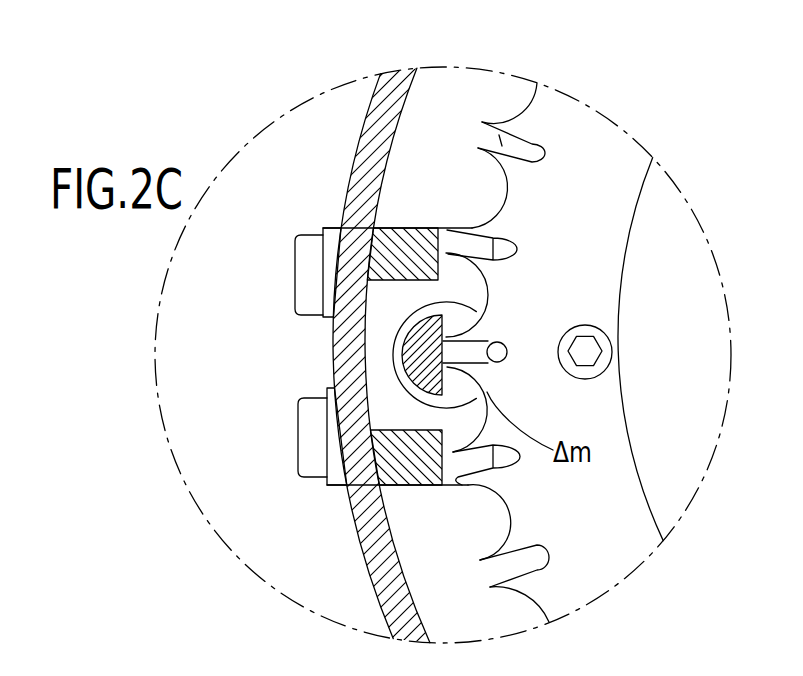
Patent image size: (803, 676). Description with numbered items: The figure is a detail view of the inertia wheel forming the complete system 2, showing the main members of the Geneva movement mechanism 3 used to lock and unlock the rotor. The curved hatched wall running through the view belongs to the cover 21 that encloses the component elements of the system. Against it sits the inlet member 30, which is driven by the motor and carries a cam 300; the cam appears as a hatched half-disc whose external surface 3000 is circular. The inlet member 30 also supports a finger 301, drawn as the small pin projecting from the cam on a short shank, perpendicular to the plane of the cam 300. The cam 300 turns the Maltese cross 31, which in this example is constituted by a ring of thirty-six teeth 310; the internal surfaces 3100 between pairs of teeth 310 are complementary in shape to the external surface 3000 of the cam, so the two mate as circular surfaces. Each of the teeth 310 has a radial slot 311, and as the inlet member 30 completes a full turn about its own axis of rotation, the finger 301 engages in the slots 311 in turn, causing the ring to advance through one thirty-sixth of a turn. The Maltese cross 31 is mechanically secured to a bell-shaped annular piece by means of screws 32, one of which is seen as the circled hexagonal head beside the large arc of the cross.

The complete system 2 is at (178, 502).
The cover 21 is at (363, 177).
The Geneva movement mechanism 3 is at (383, 336).
The inlet member 30 is at (397, 390).
The cam 300 is at (420, 357).
The external surface 3000 is at (426, 320).
The finger 301 is at (508, 353).
The Maltese cross 31 is at (607, 490).
The teeth 310 is at (497, 287).
The internal surfaces 3100 is at (498, 193).
The radial slots 311 is at (500, 142).
The screws 32 is at (587, 349).